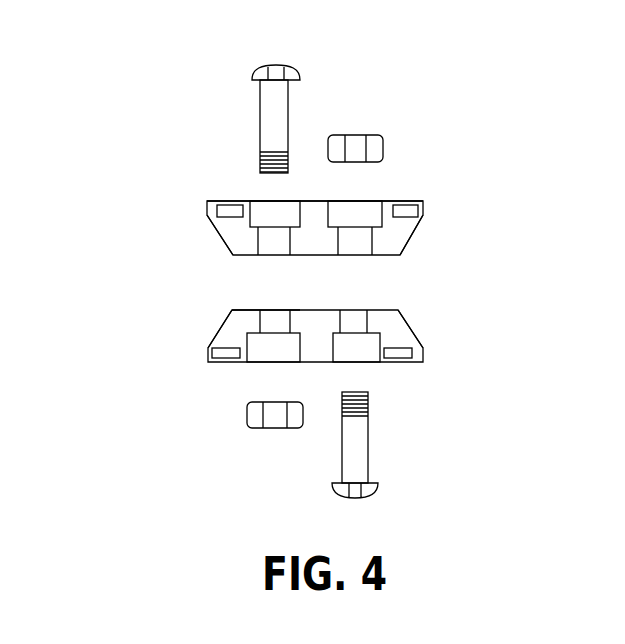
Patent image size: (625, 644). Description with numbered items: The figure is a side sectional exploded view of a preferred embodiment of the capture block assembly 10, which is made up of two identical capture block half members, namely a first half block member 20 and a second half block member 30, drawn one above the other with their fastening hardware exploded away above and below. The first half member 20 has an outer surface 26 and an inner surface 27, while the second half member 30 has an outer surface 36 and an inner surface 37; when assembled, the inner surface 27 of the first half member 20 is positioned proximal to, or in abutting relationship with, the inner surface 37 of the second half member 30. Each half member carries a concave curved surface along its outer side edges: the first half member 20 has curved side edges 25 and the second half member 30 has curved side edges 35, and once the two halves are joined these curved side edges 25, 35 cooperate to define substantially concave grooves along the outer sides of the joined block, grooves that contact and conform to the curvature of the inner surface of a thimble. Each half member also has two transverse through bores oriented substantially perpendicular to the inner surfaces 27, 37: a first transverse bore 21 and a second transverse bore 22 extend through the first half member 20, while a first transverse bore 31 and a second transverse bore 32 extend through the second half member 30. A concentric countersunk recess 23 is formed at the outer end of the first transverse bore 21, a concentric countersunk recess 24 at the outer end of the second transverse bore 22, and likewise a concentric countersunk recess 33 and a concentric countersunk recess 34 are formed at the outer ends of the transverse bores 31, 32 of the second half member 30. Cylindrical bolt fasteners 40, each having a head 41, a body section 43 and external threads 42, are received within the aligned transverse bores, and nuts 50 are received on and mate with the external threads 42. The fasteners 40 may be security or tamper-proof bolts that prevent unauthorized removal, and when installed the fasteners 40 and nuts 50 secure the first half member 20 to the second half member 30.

The capture block assembly 10 is at (138, 333).
The first half block member 20 is at (424, 212).
The first transverse bore 21 is at (264, 243).
The second transverse bore 22 is at (352, 238).
The concentric countersunk recess 23 is at (288, 203).
The concentric countersunk recess 24 is at (385, 200).
The curved side edges 25 is at (216, 236).
The outer surface 26 is at (232, 200).
The inner surface 27 is at (396, 254).
The second half block member 30 is at (424, 353).
The first transverse bore 31 is at (275, 309).
The second transverse bore 32 is at (367, 308).
The concentric countersunk recess 33 is at (297, 360).
The concentric countersunk recess 34 is at (375, 365).
The curved side edges 35 is at (400, 334).
The outer surface 36 is at (226, 363).
The inner surface 37 is at (256, 310).
The cylindrical bolt fastener 40 is at (349, 267).
The head 41 is at (297, 73).
The external threads 42 is at (262, 160).
The body section 43 is at (283, 112).
The nut 50 is at (385, 145).